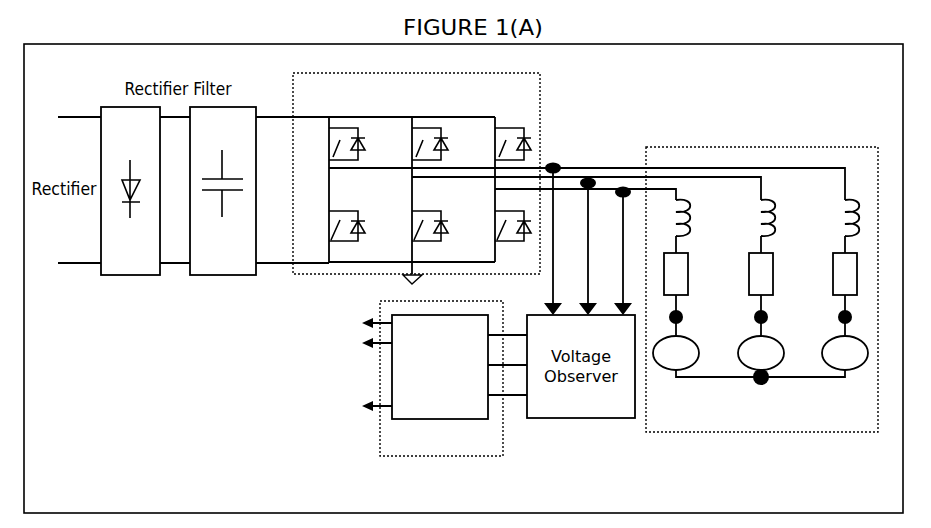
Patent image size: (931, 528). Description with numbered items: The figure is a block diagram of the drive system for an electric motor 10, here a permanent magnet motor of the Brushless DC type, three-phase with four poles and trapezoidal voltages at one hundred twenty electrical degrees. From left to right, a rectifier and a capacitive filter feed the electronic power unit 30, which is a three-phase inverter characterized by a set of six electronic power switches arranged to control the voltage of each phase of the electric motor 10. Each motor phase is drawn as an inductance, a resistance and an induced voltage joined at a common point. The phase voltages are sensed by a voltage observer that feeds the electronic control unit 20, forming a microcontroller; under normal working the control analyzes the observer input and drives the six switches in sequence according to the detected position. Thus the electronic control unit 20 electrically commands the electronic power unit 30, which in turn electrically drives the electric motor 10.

The electric motor 10 is at (675, 142).
The electronic control unit 20 is at (380, 446).
The electronic power unit 30 is at (543, 116).